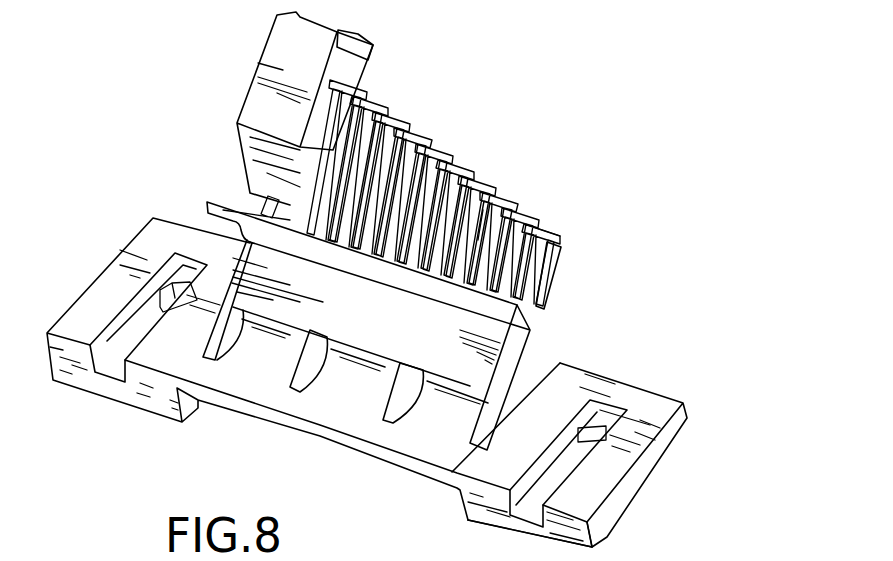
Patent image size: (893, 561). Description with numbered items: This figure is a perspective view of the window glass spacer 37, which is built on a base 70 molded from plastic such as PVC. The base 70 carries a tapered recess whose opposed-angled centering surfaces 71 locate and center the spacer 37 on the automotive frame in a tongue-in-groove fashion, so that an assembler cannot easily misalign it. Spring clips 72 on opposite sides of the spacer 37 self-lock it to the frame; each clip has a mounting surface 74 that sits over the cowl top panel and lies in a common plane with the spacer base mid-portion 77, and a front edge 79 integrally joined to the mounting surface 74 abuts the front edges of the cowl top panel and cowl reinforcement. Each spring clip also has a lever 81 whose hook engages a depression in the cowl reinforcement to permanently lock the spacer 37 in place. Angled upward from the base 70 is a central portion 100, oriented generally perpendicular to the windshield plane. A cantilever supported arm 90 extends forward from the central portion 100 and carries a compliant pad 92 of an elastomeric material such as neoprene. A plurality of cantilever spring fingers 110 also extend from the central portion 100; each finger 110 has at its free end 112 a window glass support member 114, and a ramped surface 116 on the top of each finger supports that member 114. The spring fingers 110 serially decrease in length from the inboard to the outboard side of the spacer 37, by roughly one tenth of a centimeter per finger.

The spacer 37 is at (452, 114).
The base 70 is at (405, 463).
The centering surfaces 71 is at (560, 366).
The spring clips 72 is at (607, 497).
The mounting surface 74 is at (642, 428).
The spacer base mid-portion 77 is at (258, 392).
The front edge 79 is at (607, 540).
The lever 81 is at (147, 320).
The cantilever supported arm 90 is at (250, 142).
The compliant pad 92 is at (345, 75).
The central portion 100 is at (420, 338).
The spring fingers 110 is at (238, 185).
The free end 112 is at (567, 255).
The window glass support member 114 is at (553, 238).
The ramped surface 116 is at (483, 210).